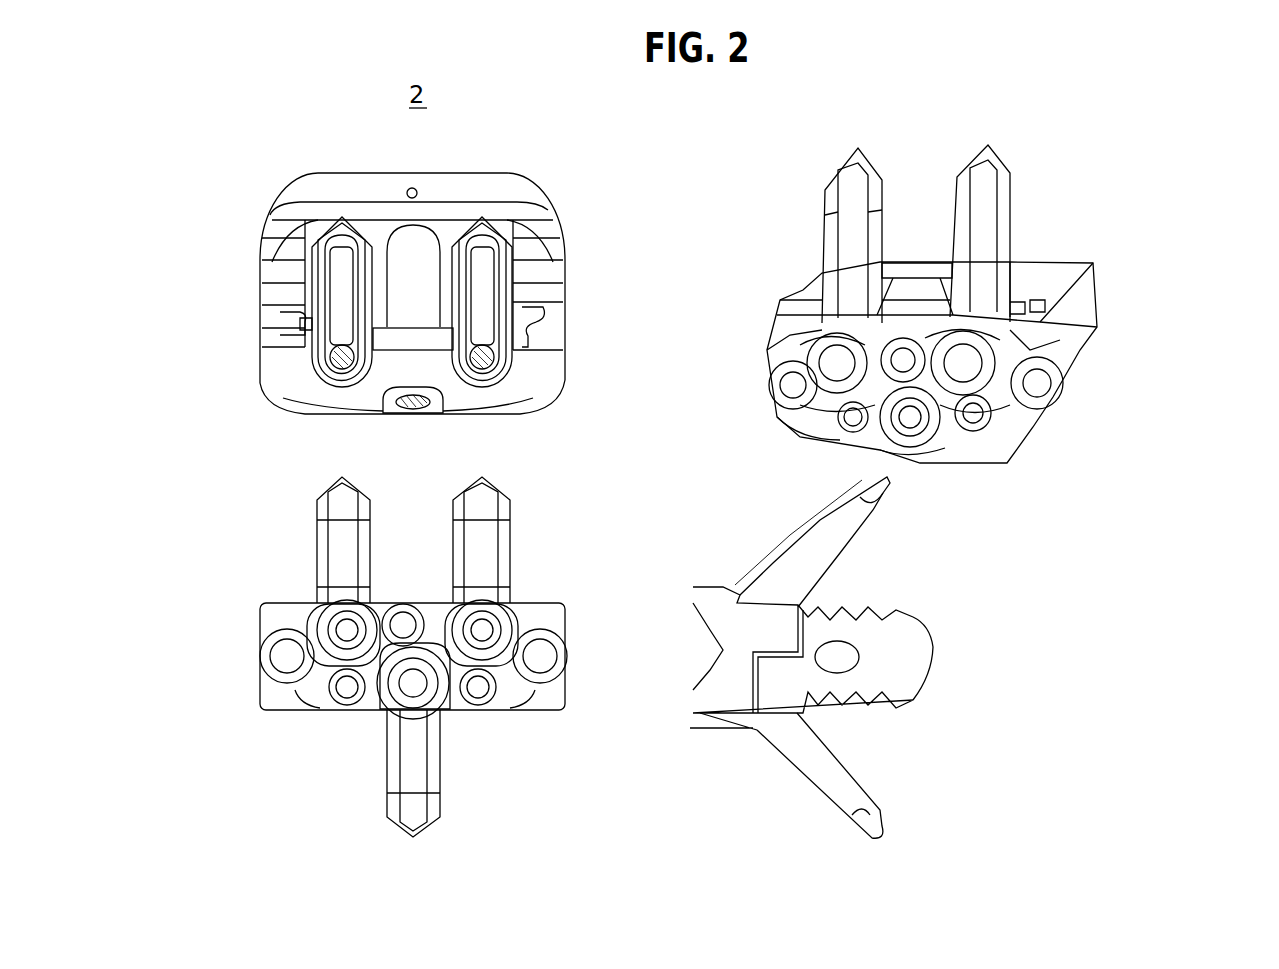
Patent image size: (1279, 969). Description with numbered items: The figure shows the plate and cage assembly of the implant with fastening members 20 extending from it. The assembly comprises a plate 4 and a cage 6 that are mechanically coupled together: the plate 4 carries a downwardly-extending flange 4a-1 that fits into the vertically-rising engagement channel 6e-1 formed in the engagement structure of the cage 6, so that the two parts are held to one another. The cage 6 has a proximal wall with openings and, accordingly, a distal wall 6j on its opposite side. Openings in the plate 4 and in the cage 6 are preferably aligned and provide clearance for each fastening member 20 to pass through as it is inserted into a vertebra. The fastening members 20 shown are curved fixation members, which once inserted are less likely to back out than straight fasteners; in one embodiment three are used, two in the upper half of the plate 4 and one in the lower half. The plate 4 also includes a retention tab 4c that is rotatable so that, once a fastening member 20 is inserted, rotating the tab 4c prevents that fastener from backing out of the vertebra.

The plate 4 is at (318, 398).
The downwardly-extending flange 4a-1 is at (292, 317).
The retention tab 4c is at (998, 417).
The cage 6 is at (318, 192).
The engagement channel 6e-1 is at (305, 322).
The distal wall 6j is at (933, 660).
The fastening member 20 is at (338, 297).